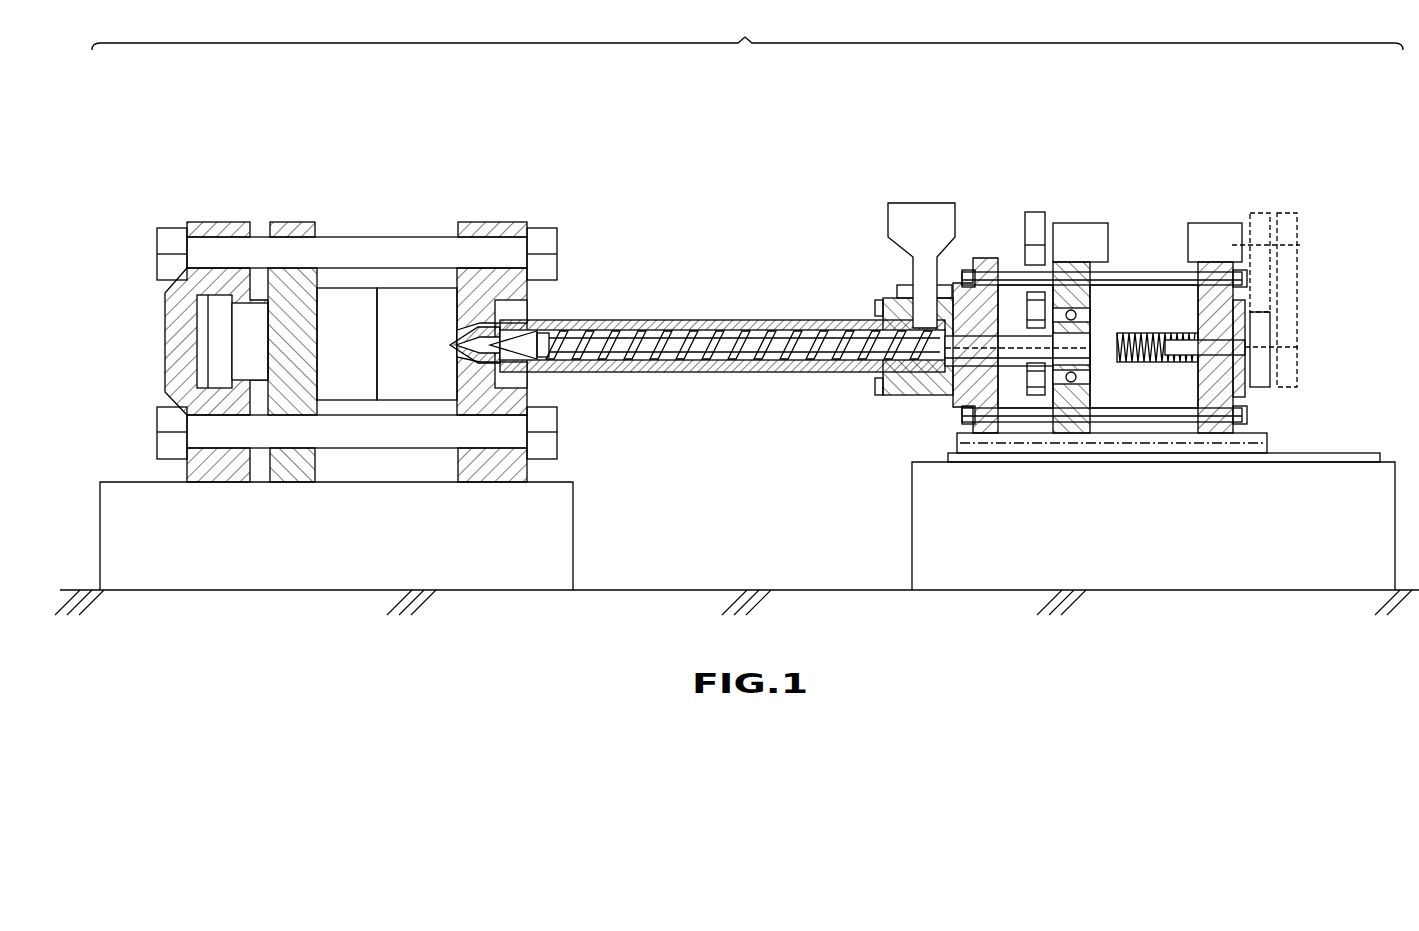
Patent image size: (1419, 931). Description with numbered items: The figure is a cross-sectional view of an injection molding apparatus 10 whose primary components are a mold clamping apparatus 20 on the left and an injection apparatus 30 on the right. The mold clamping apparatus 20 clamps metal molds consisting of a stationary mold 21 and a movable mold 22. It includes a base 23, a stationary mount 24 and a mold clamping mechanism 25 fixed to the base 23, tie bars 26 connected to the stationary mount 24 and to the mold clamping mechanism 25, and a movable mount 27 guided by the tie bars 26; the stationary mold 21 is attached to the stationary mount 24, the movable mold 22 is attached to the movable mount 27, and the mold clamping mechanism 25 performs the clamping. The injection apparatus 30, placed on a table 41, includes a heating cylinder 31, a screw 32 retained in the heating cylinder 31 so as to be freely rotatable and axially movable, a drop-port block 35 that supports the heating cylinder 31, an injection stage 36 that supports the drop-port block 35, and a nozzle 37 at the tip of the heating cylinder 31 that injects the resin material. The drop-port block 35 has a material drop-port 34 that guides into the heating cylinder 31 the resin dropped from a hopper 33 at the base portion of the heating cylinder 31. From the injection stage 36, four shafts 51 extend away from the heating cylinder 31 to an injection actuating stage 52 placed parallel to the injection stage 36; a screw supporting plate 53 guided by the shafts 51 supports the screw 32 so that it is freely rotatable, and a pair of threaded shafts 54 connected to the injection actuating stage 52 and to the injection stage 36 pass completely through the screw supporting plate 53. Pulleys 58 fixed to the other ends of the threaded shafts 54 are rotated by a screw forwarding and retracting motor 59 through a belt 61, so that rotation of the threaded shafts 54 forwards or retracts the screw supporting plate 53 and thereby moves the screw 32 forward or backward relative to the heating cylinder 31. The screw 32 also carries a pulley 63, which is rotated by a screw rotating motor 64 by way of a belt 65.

The injection molding apparatus 10 is at (747, 27).
The mold clamping apparatus 20 is at (514, 121).
The stationary mold 21 is at (419, 305).
The movable mold 22 is at (347, 305).
The base 23 is at (336, 560).
The stationary mount 24 is at (500, 226).
The mold clamping mechanism 25 is at (212, 224).
The tie bars 26 is at (388, 250).
The movable mount 27 is at (289, 224).
The injection apparatus 30 is at (1171, 122).
The heating cylinder 31 is at (667, 322).
The screw 32 is at (740, 322).
The hopper 33 is at (920, 215).
The material drop-port 34 is at (913, 281).
The drop-port block 35 is at (910, 395).
The injection stage 36 is at (980, 262).
The nozzle 37 is at (453, 341).
The table 41 is at (1167, 560).
The shafts 51 is at (1130, 275).
The injection actuating stage 52 is at (1197, 397).
The screw supporting plate 53 is at (1092, 265).
The threaded shafts 54 is at (1148, 336).
The pulleys 58 is at (1265, 360).
The screw forwarding and retracting motor 59 is at (1212, 223).
The belt 61 is at (1257, 392).
The pulley 63 is at (1030, 400).
The screw rotating motor 64 is at (1080, 225).
The belt 65 is at (1035, 212).